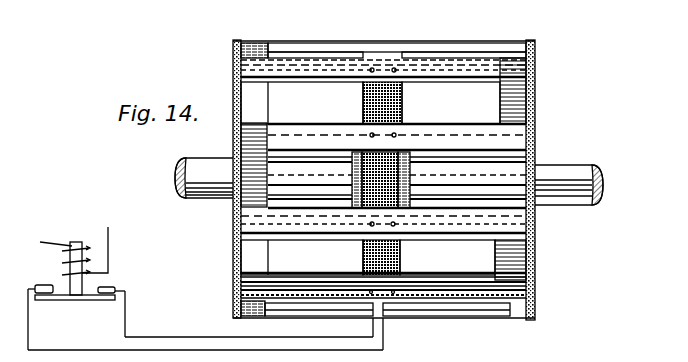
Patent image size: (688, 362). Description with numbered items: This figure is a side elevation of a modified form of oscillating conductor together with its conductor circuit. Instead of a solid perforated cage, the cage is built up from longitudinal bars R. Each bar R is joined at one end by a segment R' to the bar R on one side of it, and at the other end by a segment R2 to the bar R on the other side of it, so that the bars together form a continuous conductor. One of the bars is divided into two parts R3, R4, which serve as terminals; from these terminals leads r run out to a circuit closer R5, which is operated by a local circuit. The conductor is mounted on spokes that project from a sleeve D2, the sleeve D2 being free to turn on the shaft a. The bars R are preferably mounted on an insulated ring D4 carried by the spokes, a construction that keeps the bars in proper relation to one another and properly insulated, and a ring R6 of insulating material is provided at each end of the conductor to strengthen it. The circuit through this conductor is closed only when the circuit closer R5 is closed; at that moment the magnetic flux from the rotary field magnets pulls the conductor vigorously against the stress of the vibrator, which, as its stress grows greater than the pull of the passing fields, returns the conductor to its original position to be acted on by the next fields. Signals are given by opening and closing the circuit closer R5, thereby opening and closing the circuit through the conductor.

The longitudinal bars R is at (383, 157).
The segment R2 is at (255, 43).
The bar part R3 is at (294, 312).
The bar part R4 is at (434, 316).
The circuit closer R5 is at (62, 300).
The insulating ring R6 is at (535, 101).
The segment R' is at (510, 169).
The sleeve D2 is at (408, 173).
The insulated ring D4 is at (405, 107).
The shaft a is at (173, 177).
The leads r is at (373, 329).